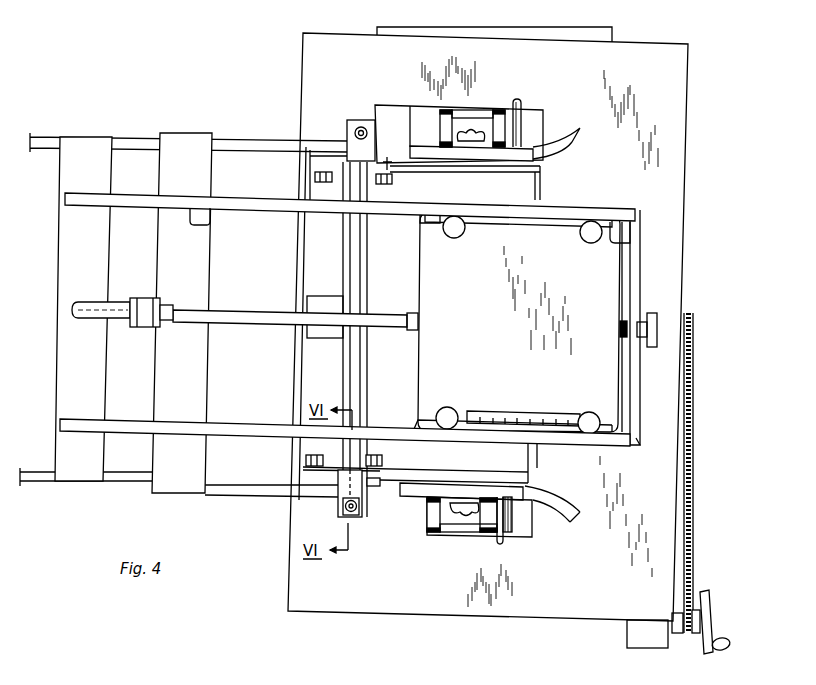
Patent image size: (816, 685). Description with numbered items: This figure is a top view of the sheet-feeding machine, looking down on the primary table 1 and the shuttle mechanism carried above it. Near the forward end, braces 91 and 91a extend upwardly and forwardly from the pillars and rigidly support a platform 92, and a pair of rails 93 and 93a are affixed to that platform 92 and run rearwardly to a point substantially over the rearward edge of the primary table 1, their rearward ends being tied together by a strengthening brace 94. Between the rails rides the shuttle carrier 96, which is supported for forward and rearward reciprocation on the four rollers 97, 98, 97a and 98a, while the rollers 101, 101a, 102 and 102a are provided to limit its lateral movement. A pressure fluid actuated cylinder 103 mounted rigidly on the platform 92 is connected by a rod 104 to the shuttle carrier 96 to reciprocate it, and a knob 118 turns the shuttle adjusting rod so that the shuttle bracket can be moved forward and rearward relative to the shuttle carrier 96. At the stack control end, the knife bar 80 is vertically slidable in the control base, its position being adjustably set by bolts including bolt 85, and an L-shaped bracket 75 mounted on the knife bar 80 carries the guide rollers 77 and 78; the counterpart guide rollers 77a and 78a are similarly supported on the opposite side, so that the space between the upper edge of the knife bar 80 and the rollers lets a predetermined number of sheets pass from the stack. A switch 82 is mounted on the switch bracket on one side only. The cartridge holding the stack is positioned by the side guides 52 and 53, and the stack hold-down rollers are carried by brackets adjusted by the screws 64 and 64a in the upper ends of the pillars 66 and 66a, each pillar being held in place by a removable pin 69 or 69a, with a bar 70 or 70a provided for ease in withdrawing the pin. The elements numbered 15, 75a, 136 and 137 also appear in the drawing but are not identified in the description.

The primary table 1 is at (656, 50).
The crank handle 15 is at (707, 598).
The side guide 52 is at (567, 518).
The side guide 53 is at (573, 140).
The screw 64 is at (464, 517).
The screw 64a is at (470, 136).
The pillar 66 is at (428, 533).
The pillar 66a is at (498, 107).
The removable pin 69 is at (500, 541).
The removable pin 69a is at (517, 100).
The bar 70 is at (508, 538).
The bar 70a is at (521, 125).
The L-shaped bracket 75 is at (381, 486).
The pinion shaft 75a is at (388, 164).
The guide roller 77 is at (384, 450).
The guide roller 77a is at (384, 185).
The guide roller 78 is at (304, 460).
The guide roller 78a is at (313, 180).
The knife bar 80 is at (357, 256).
The switch 82 is at (344, 498).
The bolt 85 is at (349, 516).
The brace 91 is at (235, 492).
The brace 91a is at (233, 140).
The platform 92 is at (142, 481).
The rail 93 is at (245, 425).
The rail 93a is at (134, 197).
The strengthening brace 94 is at (630, 374).
The shuttle carrier 96 is at (425, 357).
The roller 97 is at (413, 428).
The roller 97a is at (428, 216).
The roller 98 is at (630, 443).
The roller 98a is at (595, 222).
The roller 101 is at (444, 410).
The roller 101a is at (461, 234).
The roller 102 is at (594, 405).
The roller 102a is at (590, 236).
The pressure fluid actuated cylinder 103 is at (116, 301).
The rod 104 is at (388, 315).
The knob 118 is at (652, 314).
The bracket 136 is at (640, 233).
The bracket 137 is at (204, 218).